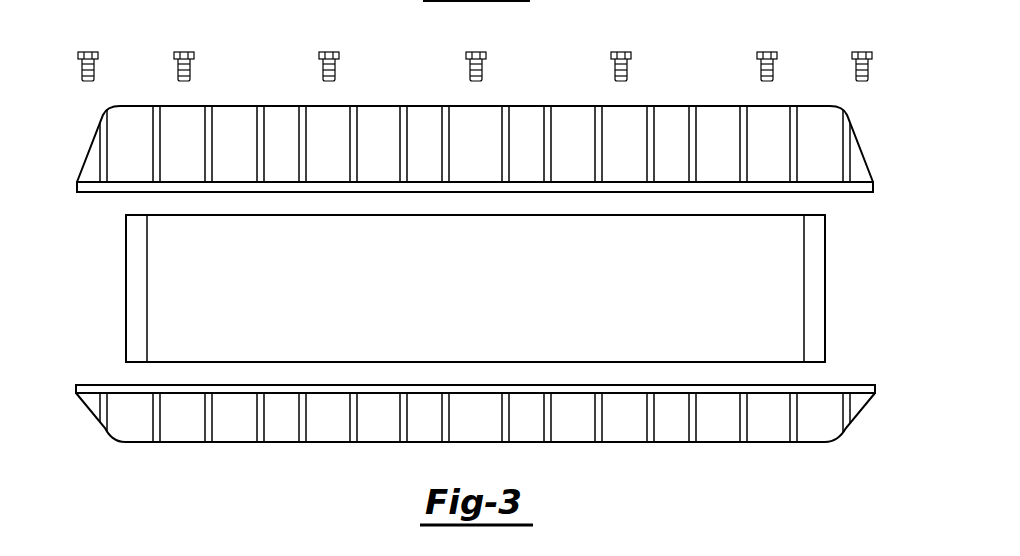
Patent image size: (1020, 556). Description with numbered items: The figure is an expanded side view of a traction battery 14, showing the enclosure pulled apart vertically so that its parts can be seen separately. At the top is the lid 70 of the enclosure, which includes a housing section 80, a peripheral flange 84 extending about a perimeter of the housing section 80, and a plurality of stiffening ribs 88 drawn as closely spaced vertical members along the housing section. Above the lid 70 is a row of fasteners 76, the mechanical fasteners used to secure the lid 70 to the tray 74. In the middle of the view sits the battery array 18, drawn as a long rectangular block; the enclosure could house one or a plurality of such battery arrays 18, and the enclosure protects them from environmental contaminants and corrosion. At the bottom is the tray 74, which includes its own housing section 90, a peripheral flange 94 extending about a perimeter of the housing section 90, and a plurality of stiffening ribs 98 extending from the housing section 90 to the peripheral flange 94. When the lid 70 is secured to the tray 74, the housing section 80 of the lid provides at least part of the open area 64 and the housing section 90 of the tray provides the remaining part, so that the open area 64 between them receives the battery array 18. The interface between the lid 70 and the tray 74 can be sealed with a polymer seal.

The traction battery 14 is at (798, 80).
The battery array 18 is at (827, 288).
The open area 64 is at (105, 273).
The lid 70 is at (80, 135).
The tray 74 is at (70, 385).
The fastener 76 is at (89, 52).
The housing section 80 is at (862, 150).
The peripheral flange 84 is at (874, 192).
The stiffening ribs 88 is at (740, 122).
The housing section 90 is at (862, 413).
The peripheral flange 94 is at (876, 385).
The stiffening ribs 98 is at (790, 417).